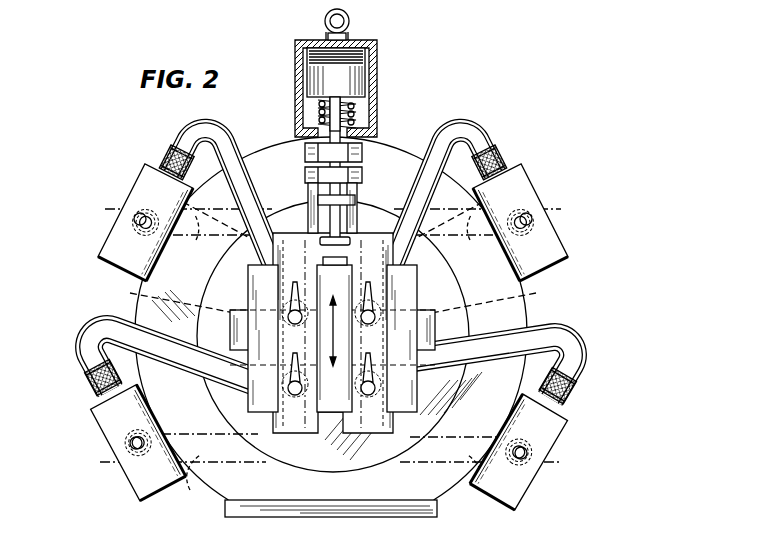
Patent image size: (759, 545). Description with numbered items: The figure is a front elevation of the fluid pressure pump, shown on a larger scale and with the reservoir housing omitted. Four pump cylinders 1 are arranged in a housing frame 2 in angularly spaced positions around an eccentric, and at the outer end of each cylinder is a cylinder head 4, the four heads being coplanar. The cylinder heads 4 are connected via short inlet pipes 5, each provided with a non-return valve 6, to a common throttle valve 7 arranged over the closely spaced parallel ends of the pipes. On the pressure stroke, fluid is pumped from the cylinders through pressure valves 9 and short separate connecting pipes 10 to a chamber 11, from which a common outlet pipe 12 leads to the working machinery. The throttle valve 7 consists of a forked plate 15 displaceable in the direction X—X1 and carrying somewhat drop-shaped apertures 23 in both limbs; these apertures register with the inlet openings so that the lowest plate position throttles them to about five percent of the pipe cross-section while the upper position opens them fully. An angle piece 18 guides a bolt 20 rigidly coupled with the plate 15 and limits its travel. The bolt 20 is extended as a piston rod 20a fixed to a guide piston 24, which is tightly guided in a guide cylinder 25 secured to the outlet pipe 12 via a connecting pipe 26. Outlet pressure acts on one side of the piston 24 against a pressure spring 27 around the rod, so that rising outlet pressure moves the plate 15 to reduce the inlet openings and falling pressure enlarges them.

The pump cylinder 1 is at (160, 286).
The housing frame 2 is at (524, 320).
The cylinder head 4 is at (102, 228).
The inlet pipe 5 is at (197, 121).
The non-return valve 6 is at (162, 152).
The throttle valve 7 is at (334, 420).
The pressure valve 9 is at (130, 212).
The connecting pipe 10 is at (330, 354).
The chamber 11 is at (238, 313).
The outlet pipe 12 is at (351, 21).
The forked plate 15 is at (362, 450).
The angle piece 18 is at (363, 174).
The bolt 20 is at (357, 201).
The piston rod 20a is at (330, 101).
The drop-shaped aperture 23 is at (412, 310).
The guide piston 24 is at (366, 71).
The guide cylinder 25 is at (296, 56).
The connecting pipe 26 is at (328, 34).
The pressure spring 27 is at (357, 105).